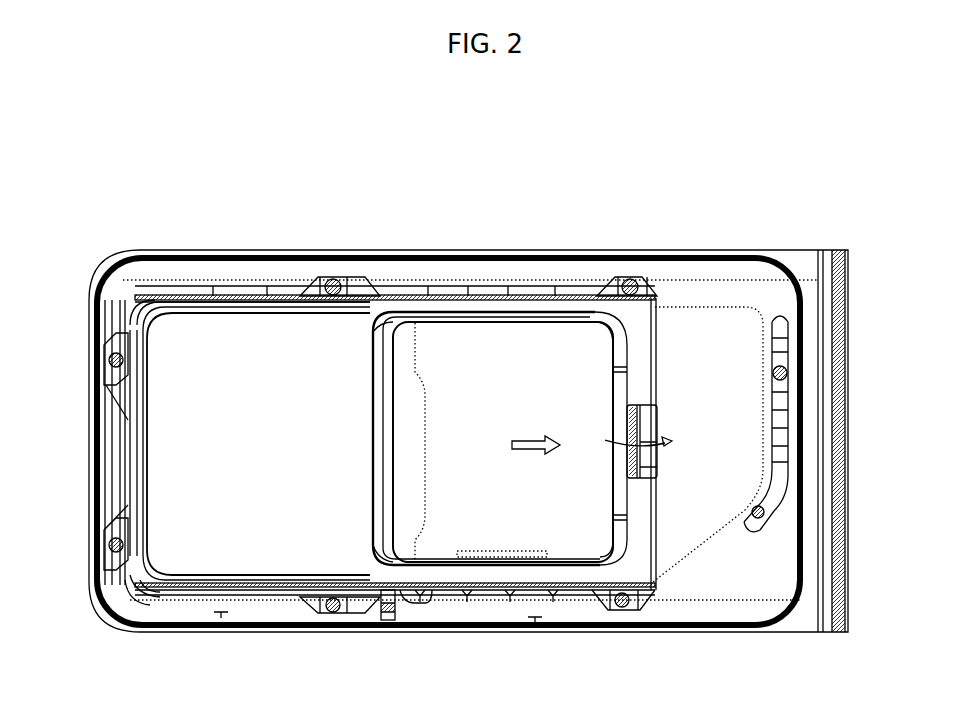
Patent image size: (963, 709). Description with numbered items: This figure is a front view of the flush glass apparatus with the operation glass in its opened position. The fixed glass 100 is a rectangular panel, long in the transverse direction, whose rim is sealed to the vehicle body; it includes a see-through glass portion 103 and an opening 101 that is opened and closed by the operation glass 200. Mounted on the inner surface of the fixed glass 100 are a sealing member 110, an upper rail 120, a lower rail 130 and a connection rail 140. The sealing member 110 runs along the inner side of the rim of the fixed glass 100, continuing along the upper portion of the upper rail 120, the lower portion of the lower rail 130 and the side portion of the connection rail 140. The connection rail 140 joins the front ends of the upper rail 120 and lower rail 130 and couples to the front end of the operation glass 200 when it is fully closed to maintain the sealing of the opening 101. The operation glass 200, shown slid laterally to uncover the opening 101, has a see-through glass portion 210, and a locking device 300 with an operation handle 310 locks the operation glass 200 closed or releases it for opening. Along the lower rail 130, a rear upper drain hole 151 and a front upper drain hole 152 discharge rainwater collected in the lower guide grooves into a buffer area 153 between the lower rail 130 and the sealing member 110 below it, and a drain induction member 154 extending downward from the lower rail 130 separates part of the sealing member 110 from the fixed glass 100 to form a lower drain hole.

The fixed glass 100 is at (805, 262).
The opening 101 is at (256, 371).
The see-through glass portion 103 is at (740, 325).
The sealing member 110 is at (598, 256).
The upper rail 120 is at (393, 290).
The lower rail 130 is at (487, 597).
The connection rail 140 is at (120, 470).
The rear upper drain hole 151 is at (418, 603).
The front upper drain hole 152 is at (148, 598).
The buffer area 153 is at (221, 615).
The drain induction member 154 is at (388, 622).
The operation glass 200 is at (552, 391).
The see-through glass portion 210 is at (503, 350).
The locking device 300 is at (668, 413).
The operation handle 310 is at (658, 467).